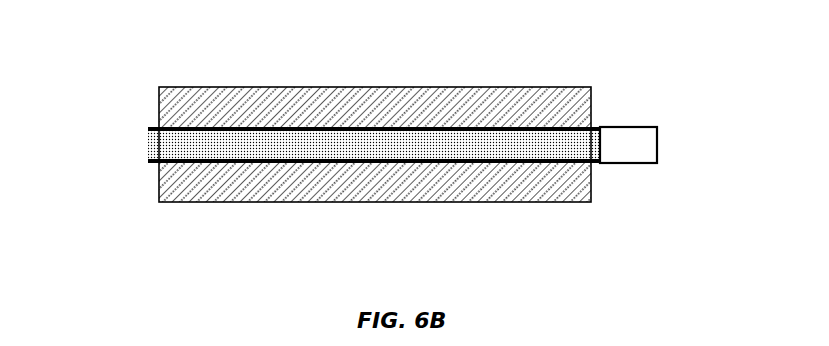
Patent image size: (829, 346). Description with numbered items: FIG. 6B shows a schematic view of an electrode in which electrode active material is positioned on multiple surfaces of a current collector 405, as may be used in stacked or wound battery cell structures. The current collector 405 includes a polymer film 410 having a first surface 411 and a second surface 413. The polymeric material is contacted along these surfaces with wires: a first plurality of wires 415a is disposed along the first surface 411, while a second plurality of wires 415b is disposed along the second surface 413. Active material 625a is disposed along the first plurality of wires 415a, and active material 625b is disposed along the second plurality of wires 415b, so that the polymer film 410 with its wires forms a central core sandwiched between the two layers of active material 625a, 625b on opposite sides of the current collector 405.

The current collector 405 is at (658, 145).
The polymer film 410 is at (147, 144).
The first surface 411 is at (597, 126).
The second surface 413 is at (597, 164).
The first plurality of wires 415a is at (147, 127).
The second plurality of wires 415b is at (147, 163).
The active material 625a is at (337, 87).
The active material 625b is at (337, 202).